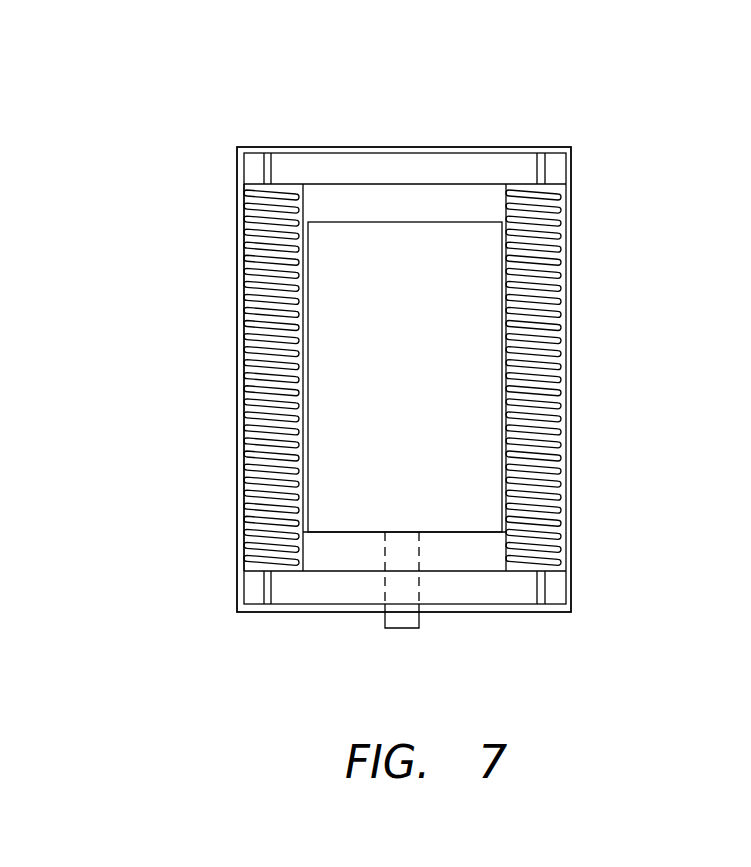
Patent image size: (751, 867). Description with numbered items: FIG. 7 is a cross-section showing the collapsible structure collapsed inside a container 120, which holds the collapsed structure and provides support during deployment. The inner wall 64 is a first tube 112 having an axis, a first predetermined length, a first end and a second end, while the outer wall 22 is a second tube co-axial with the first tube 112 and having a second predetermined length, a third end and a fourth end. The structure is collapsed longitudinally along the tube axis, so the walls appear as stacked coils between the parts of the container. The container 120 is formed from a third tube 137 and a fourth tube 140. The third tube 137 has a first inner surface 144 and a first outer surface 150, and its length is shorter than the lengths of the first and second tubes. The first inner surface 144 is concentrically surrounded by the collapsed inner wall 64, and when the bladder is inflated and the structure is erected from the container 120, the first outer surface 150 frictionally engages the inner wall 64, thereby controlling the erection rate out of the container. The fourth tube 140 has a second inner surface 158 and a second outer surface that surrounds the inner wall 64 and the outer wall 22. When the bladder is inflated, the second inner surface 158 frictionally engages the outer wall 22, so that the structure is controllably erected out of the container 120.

The container 120 is at (468, 140).
The fourth tube 140 is at (572, 285).
The second inner surface 158 is at (553, 562).
The outer wall 22 is at (268, 266).
The first tube 112 is at (535, 405).
The first outer surface 150 is at (252, 318).
The inner wall 64 is at (293, 295).
The first inner surface 144 is at (310, 372).
The third tube 137 is at (310, 482).